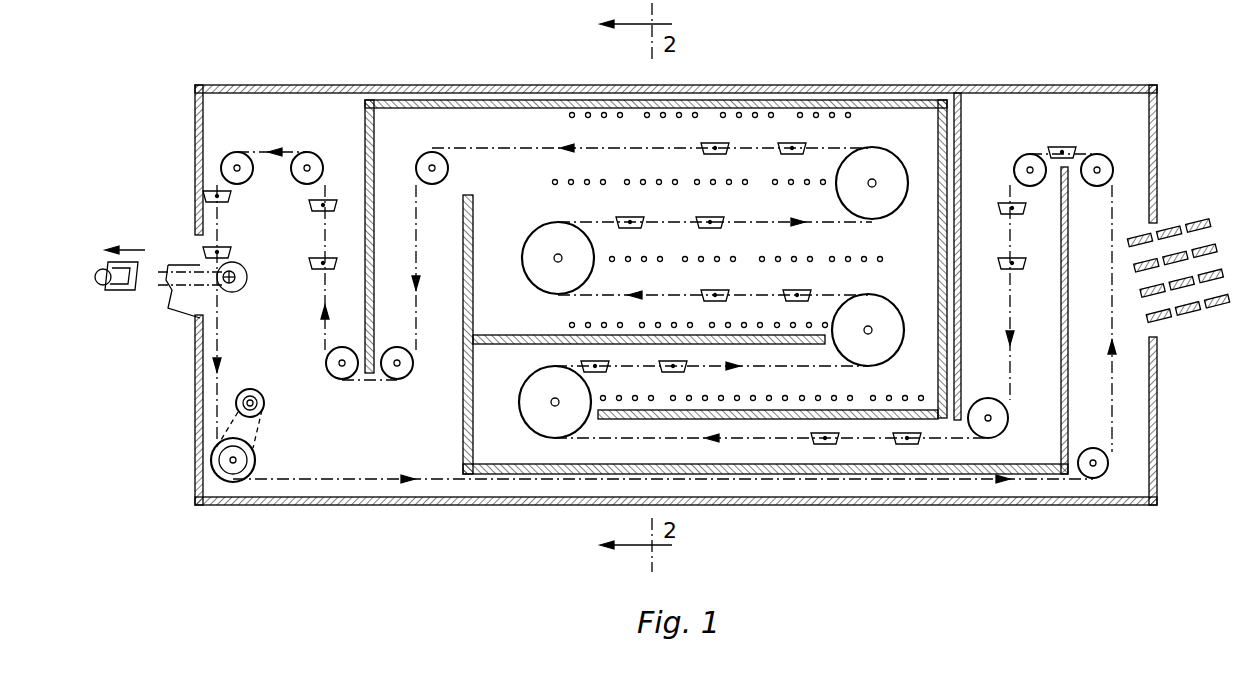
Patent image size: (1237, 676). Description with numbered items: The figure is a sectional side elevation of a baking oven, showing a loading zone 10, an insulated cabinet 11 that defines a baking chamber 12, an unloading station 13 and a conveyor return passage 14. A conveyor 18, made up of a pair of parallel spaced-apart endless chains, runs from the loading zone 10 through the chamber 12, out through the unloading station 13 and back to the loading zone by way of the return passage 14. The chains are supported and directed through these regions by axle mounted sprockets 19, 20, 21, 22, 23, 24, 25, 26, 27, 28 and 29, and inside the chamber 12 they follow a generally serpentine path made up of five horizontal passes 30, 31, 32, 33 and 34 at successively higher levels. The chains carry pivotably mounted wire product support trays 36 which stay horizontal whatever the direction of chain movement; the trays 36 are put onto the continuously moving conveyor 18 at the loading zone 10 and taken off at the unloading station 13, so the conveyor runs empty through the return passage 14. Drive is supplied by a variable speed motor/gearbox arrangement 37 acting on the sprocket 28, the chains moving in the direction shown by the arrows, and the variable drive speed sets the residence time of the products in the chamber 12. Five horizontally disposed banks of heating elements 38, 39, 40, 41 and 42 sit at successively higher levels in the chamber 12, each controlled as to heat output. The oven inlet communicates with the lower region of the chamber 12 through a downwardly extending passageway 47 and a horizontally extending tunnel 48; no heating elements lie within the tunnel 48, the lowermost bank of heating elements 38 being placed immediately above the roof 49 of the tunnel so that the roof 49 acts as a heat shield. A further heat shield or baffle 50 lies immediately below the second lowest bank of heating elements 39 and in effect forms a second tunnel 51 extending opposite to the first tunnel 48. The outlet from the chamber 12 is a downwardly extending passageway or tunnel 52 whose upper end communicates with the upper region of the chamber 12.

The loading zone 10 is at (1157, 207).
The insulated cabinet 11 is at (832, 90).
The baking chamber 12 is at (517, 178).
The unloading station 13 is at (190, 245).
The conveyor return passage 14 is at (857, 487).
The conveyor 18 is at (325, 478).
The sprocket 19 is at (1097, 160).
The sprocket 20 is at (988, 432).
The sprocket 21 is at (542, 415).
The sprocket 22 is at (888, 305).
The sprocket 23 is at (533, 262).
The sprocket 24 is at (878, 178).
The sprocket 25 is at (432, 155).
The sprocket 26 is at (395, 402).
The sprocket 27 is at (307, 160).
The sprocket 28 is at (243, 458).
The sprocket 29 is at (1090, 478).
The horizontal pass 30 is at (768, 440).
The horizontal pass 31 is at (788, 366).
The horizontal pass 32 is at (648, 293).
The horizontal pass 33 is at (785, 220).
The horizontal pass 34 is at (662, 148).
The product support tray 36 is at (322, 212).
The variable speed motor/gearbox arrangement 37 is at (248, 388).
The bank of heating elements 38 is at (850, 397).
The bank of heating elements 39 is at (568, 324).
The bank of heating elements 40 is at (835, 259).
The bank of heating elements 41 is at (590, 185).
The bank of heating elements 42 is at (850, 118).
The downwardly extending passageway 47 is at (975, 203).
The horizontally extending tunnel 48 is at (602, 450).
The roof of the tunnel 49 is at (665, 421).
The heat shield or baffle 50 is at (514, 346).
The second tunnel 51 is at (642, 380).
The downwardly extending passageway or tunnel 52 is at (438, 223).